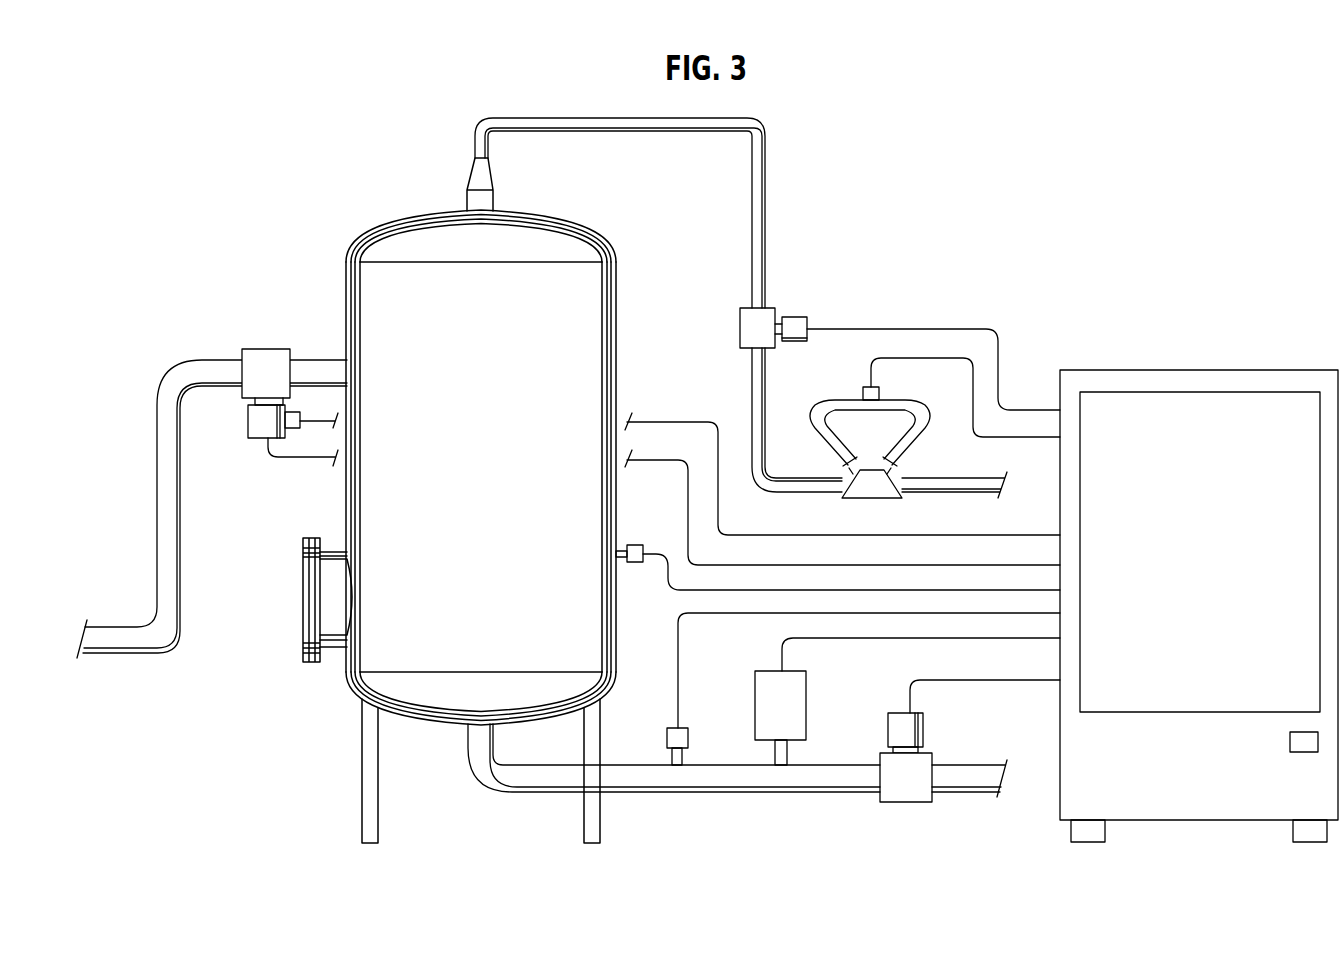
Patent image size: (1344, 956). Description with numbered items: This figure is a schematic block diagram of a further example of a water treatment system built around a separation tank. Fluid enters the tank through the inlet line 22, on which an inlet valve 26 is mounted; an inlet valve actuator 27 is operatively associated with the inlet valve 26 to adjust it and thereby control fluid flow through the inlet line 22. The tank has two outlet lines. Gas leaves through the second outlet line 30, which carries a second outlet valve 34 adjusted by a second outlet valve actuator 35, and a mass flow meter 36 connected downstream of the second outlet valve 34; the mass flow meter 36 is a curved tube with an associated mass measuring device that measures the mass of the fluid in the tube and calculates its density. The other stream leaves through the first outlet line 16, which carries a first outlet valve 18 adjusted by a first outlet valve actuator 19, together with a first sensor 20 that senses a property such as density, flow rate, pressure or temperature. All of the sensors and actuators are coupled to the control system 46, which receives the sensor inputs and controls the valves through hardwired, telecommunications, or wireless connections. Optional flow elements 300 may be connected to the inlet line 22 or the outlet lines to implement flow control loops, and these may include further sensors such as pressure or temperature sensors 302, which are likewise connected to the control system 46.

The first outlet line 16 is at (735, 794).
The first outlet valve 18 is at (892, 790).
The first outlet valve actuator 19 is at (888, 725).
The first sensor 20 is at (767, 716).
The inlet line 22 is at (157, 527).
The inlet valve 26 is at (252, 385).
The inlet valve actuator 27 is at (258, 423).
The second outlet line 30 is at (766, 214).
The second outlet valve 34 is at (748, 326).
The second outlet valve actuator 35 is at (797, 314).
The mass flow meter 36 is at (843, 402).
The control system 46 is at (1185, 567).
The optional flow elements 300 is at (292, 431).
The pressure or temperature sensors 302 is at (637, 545).